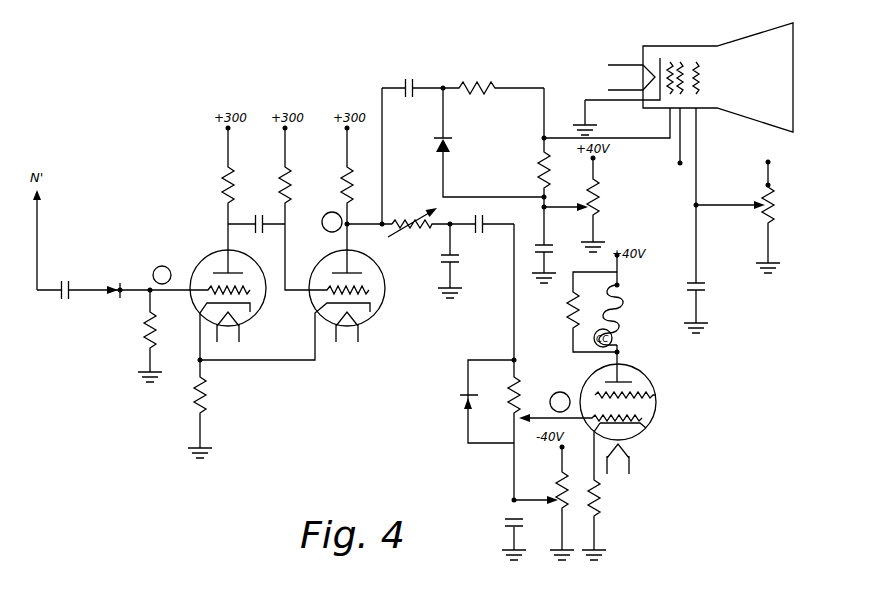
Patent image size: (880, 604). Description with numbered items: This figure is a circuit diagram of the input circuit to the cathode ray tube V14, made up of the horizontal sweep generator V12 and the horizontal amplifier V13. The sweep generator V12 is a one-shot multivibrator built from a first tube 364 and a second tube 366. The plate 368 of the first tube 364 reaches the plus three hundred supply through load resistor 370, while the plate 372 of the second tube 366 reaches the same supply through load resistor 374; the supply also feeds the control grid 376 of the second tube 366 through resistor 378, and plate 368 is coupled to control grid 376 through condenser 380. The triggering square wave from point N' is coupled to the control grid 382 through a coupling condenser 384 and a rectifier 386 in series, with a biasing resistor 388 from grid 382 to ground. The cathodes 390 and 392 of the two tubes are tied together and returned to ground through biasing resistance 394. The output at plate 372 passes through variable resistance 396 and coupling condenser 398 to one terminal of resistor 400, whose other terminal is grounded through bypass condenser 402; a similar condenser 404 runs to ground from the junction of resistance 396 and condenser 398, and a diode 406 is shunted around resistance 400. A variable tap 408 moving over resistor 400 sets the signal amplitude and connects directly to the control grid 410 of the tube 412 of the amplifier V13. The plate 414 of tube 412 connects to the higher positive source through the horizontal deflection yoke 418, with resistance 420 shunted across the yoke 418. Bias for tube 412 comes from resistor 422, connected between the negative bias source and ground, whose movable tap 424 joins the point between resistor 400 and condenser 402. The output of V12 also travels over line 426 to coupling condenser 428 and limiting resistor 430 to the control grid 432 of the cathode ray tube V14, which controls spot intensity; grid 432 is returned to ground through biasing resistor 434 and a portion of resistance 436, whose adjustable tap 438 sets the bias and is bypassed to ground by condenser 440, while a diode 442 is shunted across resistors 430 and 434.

The first tube 364 is at (242, 260).
The second tube 366 is at (378, 255).
The plate 368 is at (223, 270).
The load resistor 370 is at (224, 188).
The plate 372 is at (340, 271).
The load resistor 374 is at (352, 180).
The control grid 376 is at (368, 291).
The resistor 378 is at (291, 175).
The condenser 380 is at (253, 216).
The control grid 382 is at (210, 287).
The coupling condenser 384 is at (60, 300).
The rectifier 386 is at (116, 300).
The biasing resistor 388 is at (146, 335).
The cathode 390 is at (241, 338).
The cathode 392 is at (362, 328).
The biasing resistance 394 is at (196, 405).
The variable resistance 396 is at (410, 218).
The coupling condenser 398 is at (484, 232).
The resistor 400 is at (515, 373).
The bypass condenser 402 is at (510, 516).
The condenser 404 is at (456, 266).
The diode 406 is at (462, 400).
The variable tap 408 is at (521, 402).
The control grid 410 is at (642, 414).
The tube 412 is at (654, 377).
The plate 414 is at (632, 380).
The horizontal deflection yoke 418 is at (627, 306).
The resistance 420 is at (569, 318).
The resistor 422 is at (560, 480).
The movable tap 424 is at (556, 518).
The line 426 is at (380, 100).
The coupling condenser 428 is at (404, 84).
The limiting resistor 430 is at (483, 84).
The control grid 432 is at (673, 62).
The biasing resistor 434 is at (540, 170).
The resistance 436 is at (598, 192).
The adjustable tap 438 is at (581, 204).
The bypass condenser 440 is at (540, 243).
The diode 442 is at (452, 139).
The horizontal sweep generator V12 is at (255, 316).
The horizontal amplifier V13 is at (641, 441).
The cathode ray tube V14 is at (665, 46).